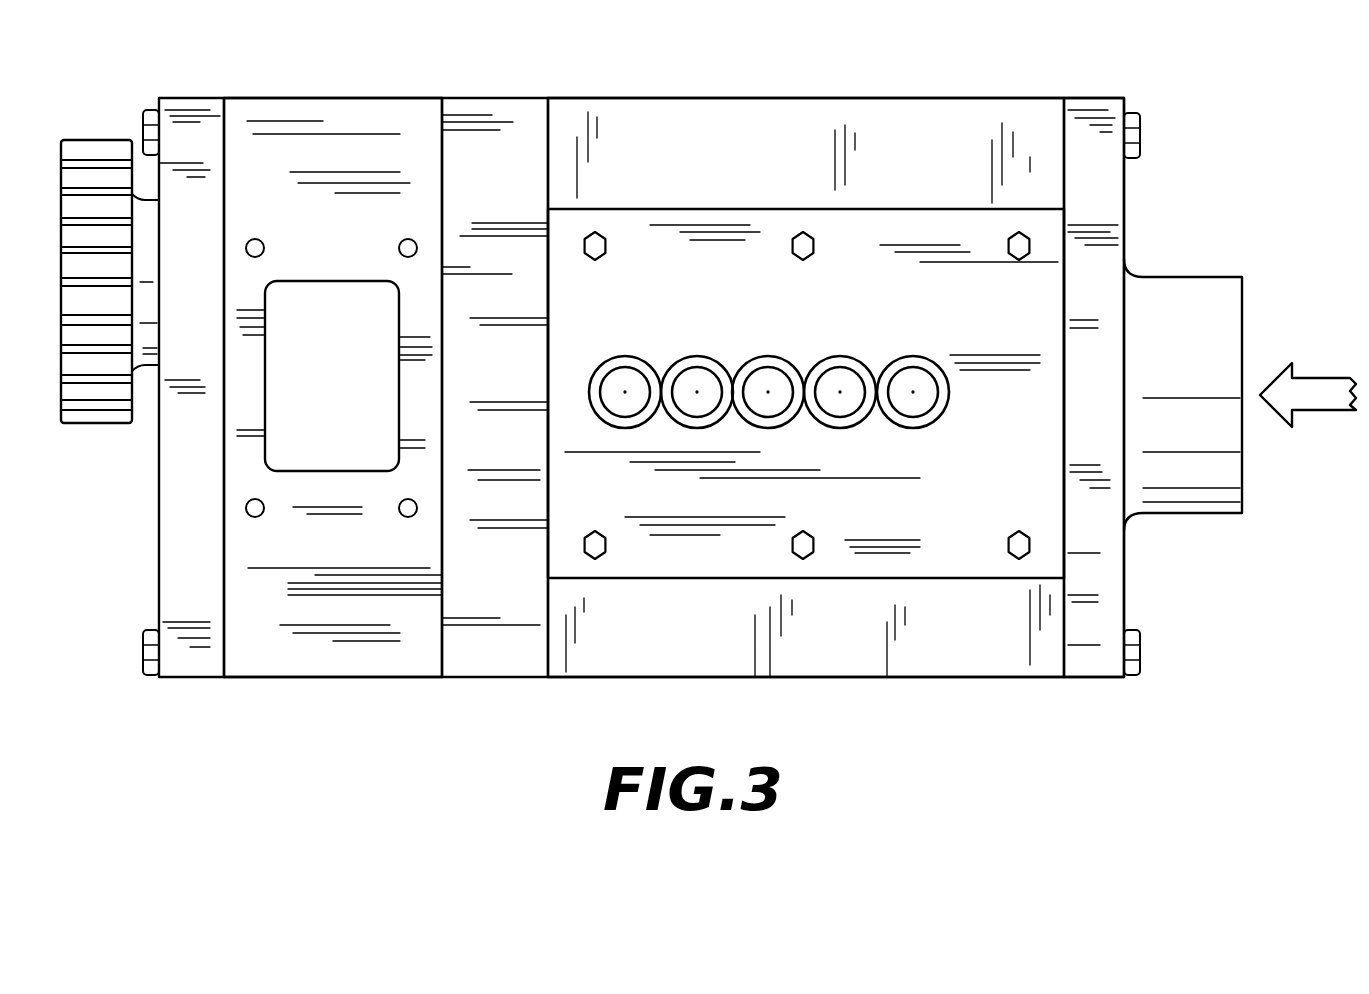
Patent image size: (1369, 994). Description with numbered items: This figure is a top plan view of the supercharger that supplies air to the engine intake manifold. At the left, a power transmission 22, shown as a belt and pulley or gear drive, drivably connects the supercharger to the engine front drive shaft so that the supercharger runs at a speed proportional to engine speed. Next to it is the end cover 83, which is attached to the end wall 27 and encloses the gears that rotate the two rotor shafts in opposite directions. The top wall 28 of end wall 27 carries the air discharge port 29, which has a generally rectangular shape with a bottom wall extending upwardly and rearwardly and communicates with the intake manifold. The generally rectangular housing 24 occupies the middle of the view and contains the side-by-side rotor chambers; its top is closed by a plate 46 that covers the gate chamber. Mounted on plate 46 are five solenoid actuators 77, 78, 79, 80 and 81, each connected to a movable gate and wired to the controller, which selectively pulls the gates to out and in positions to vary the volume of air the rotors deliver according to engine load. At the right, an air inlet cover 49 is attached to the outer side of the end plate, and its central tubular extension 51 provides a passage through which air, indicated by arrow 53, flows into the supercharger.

The power transmission 22 is at (93, 425).
The housing 24 is at (838, 667).
The end wall 27 is at (330, 680).
The top wall 28 is at (343, 120).
The air discharge port 29 is at (348, 334).
The plate 46 is at (950, 555).
The air inlet cover 49 is at (1105, 200).
The central tubular extension 51 is at (1200, 297).
The arrow 53 is at (1327, 397).
The solenoid actuator 77 is at (621, 355).
The solenoid actuator 78 is at (693, 355).
The solenoid actuator 79 is at (765, 355).
The solenoid actuator 80 is at (838, 355).
The solenoid actuator 81 is at (912, 355).
The end cover 83 is at (191, 660).